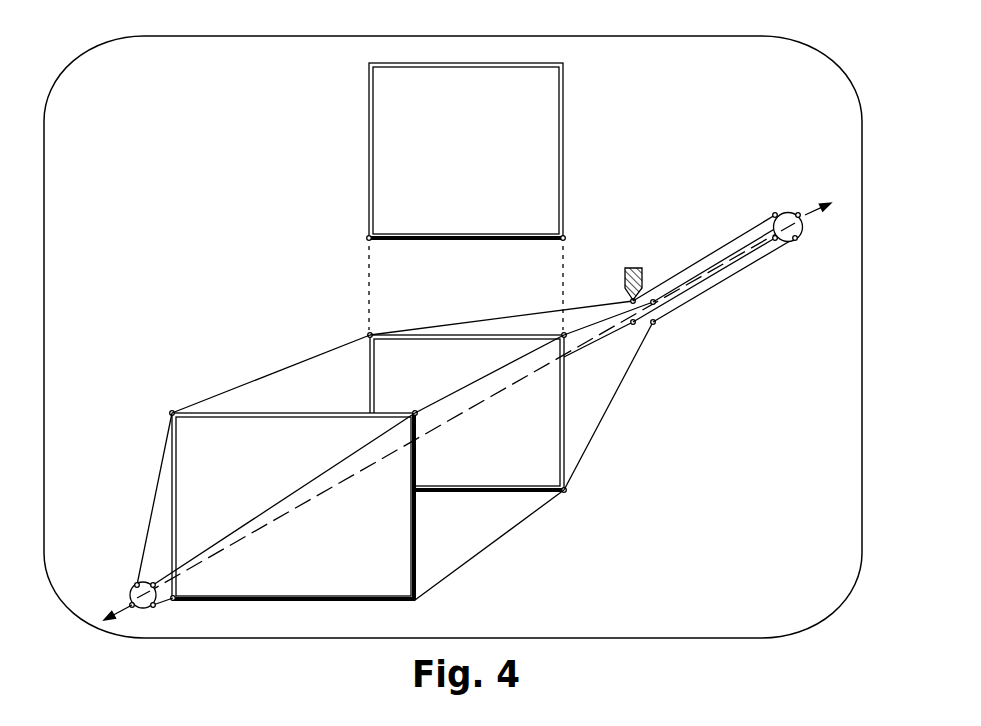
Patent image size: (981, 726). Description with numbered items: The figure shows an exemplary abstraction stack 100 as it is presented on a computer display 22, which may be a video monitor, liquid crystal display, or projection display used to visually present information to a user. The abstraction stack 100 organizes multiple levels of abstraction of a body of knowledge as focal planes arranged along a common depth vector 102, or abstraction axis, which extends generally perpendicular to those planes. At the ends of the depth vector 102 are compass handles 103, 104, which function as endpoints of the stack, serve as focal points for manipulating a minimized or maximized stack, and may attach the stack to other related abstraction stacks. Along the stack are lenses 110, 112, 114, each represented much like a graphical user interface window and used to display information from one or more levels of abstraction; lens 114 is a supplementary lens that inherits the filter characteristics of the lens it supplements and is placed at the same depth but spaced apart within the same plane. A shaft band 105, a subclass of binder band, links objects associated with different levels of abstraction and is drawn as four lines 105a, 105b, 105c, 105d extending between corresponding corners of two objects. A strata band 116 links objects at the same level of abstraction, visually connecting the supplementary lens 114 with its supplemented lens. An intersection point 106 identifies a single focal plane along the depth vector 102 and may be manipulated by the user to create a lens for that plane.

The computer display 22 is at (810, 633).
The abstraction stack 100 is at (133, 270).
The depth vector 102 is at (127, 603).
The compass handle 103 is at (787, 222).
The compass handle 104 is at (162, 602).
The shaft band 105 is at (678, 320).
The line 105a is at (700, 275).
The line 105b is at (697, 297).
The line 105c is at (747, 255).
The line 105d is at (742, 233).
The intersection point 106 is at (625, 270).
The lens 110 is at (389, 566).
The lens 112 is at (529, 446).
The lens 114 is at (400, 174).
The strata band 116 is at (375, 313).